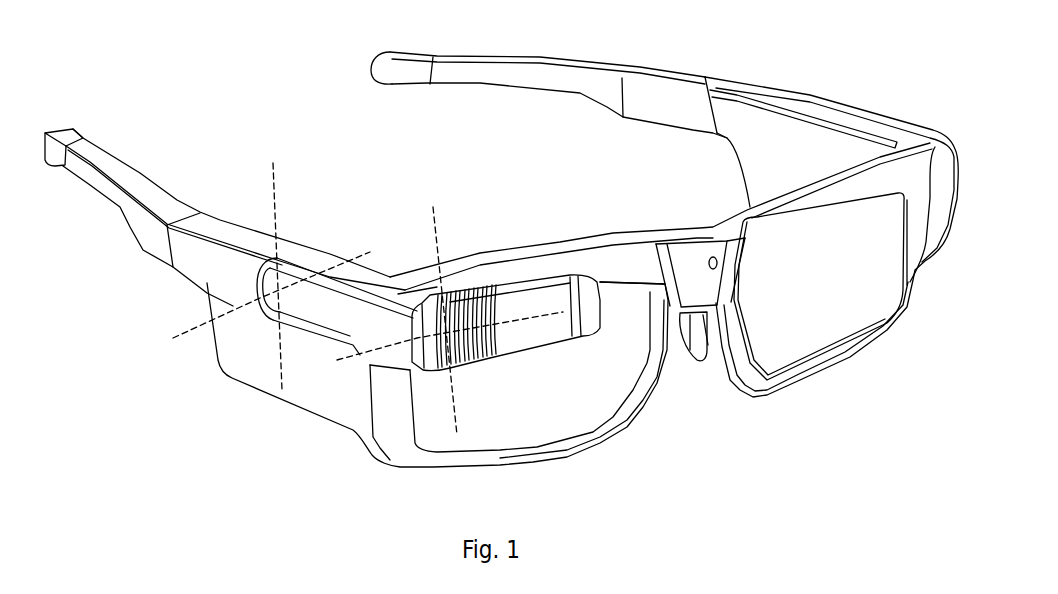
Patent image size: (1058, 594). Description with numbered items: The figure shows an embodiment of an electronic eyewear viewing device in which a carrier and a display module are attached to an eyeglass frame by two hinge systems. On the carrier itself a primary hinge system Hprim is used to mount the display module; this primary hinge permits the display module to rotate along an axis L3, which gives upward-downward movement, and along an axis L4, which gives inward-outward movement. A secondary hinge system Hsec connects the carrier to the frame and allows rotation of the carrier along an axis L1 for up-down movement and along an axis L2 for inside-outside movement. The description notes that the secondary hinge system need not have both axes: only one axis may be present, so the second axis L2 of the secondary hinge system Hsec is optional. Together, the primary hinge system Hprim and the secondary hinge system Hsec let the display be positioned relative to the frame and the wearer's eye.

The axis L1 is at (271, 312).
The axis L2 is at (294, 268).
The axis L3 is at (450, 355).
The axis L4 is at (455, 310).
The secondary hinge system Hsec is at (263, 307).
The primary hinge system Hprim is at (480, 337).